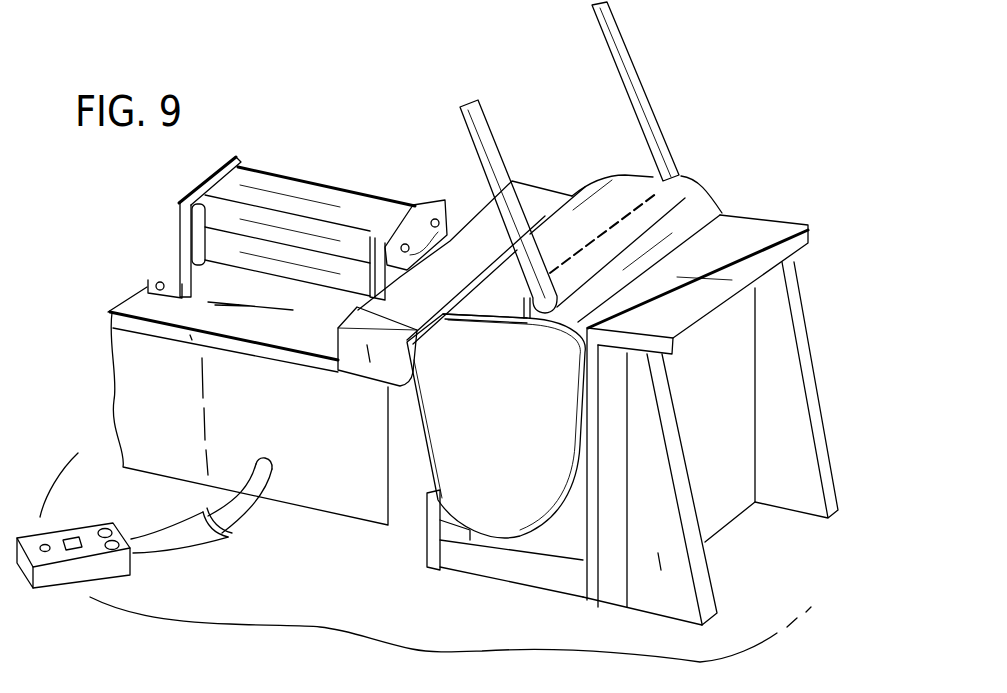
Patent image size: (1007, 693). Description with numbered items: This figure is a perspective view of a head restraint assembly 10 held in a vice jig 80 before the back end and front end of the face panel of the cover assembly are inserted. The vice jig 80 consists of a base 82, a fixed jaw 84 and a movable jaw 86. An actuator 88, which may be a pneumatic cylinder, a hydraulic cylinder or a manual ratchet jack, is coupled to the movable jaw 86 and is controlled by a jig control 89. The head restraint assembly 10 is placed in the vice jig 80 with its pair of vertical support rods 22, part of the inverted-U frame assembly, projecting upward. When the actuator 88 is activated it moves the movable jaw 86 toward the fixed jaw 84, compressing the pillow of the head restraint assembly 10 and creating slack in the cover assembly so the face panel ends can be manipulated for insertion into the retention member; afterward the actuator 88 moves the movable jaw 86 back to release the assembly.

The head restraint assembly 10 is at (598, 357).
The vertical support rods 22 is at (490, 123).
The vice jig 80 is at (326, 99).
The base 82 is at (332, 562).
The fixed jaw 84 is at (733, 212).
The movable jaw 86 is at (350, 365).
The actuator 88 is at (305, 180).
The jig control 89 is at (58, 590).